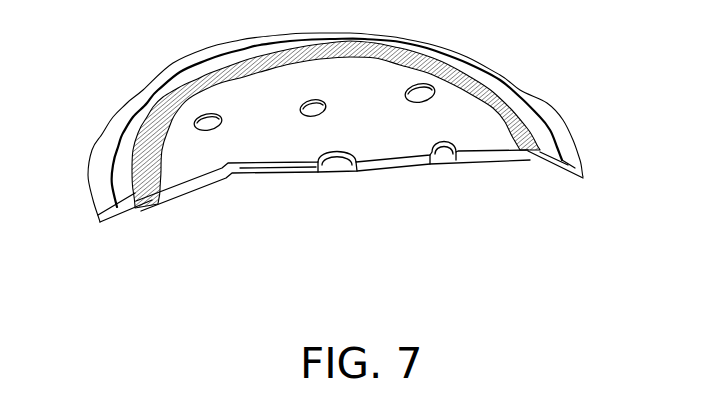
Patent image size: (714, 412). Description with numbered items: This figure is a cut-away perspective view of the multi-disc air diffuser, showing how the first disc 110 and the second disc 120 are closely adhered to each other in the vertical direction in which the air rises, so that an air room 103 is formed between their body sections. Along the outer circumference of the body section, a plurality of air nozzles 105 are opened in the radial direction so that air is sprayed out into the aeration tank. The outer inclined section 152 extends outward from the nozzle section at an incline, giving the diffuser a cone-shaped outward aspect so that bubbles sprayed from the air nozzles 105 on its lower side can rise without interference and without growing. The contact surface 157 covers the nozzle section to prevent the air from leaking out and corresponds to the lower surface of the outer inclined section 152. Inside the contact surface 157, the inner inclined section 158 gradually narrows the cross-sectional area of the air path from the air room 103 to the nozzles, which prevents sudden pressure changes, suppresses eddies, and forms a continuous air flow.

The air room 103 is at (184, 193).
The air nozzle 105 is at (111, 181).
The first disc 110 is at (523, 98).
The second disc 120 is at (566, 128).
The outer inclined section 152 is at (570, 153).
The contact surface 157 is at (137, 216).
The inner inclined section 158 is at (150, 201).